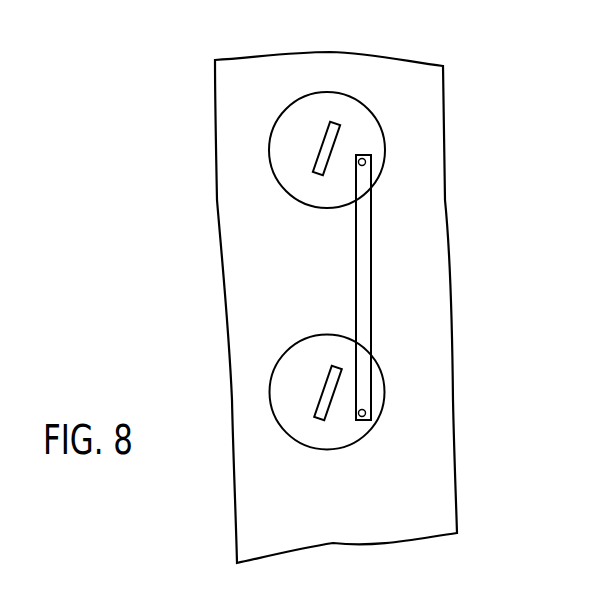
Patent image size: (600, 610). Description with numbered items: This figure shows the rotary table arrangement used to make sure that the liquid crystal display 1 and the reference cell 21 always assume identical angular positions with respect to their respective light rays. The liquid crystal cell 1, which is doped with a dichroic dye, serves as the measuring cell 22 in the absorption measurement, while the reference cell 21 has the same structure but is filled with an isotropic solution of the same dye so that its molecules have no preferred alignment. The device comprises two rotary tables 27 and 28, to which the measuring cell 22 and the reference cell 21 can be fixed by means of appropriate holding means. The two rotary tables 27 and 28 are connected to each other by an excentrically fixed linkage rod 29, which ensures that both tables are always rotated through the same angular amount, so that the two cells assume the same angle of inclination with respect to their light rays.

The liquid crystal cell 1 is at (313, 135).
The reference cell 21 is at (313, 420).
The measuring cell 22 is at (327, 118).
The rotary table 27 is at (358, 118).
The rotary table 28 is at (337, 432).
The linkage rod 29 is at (366, 272).